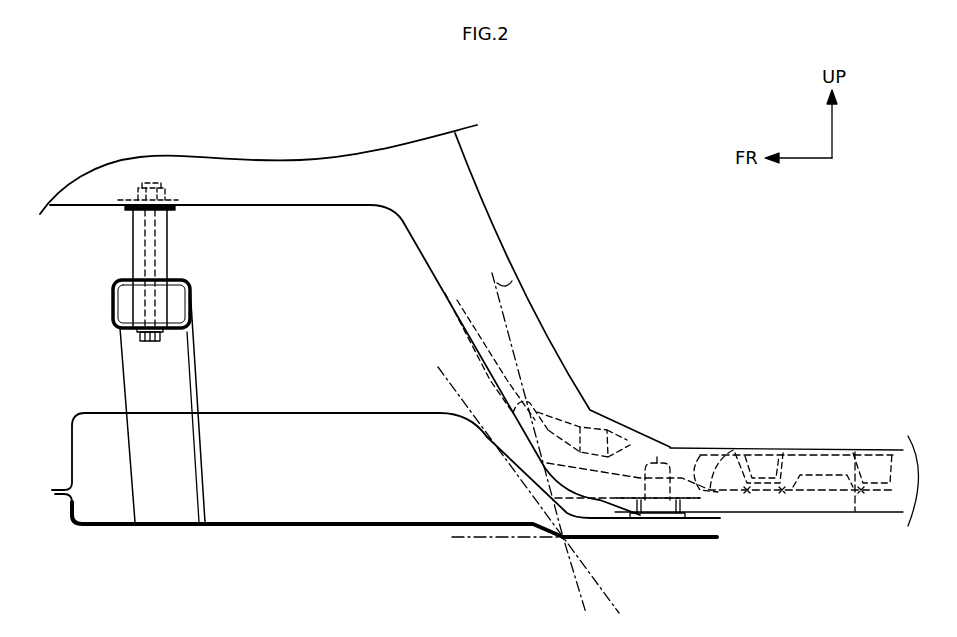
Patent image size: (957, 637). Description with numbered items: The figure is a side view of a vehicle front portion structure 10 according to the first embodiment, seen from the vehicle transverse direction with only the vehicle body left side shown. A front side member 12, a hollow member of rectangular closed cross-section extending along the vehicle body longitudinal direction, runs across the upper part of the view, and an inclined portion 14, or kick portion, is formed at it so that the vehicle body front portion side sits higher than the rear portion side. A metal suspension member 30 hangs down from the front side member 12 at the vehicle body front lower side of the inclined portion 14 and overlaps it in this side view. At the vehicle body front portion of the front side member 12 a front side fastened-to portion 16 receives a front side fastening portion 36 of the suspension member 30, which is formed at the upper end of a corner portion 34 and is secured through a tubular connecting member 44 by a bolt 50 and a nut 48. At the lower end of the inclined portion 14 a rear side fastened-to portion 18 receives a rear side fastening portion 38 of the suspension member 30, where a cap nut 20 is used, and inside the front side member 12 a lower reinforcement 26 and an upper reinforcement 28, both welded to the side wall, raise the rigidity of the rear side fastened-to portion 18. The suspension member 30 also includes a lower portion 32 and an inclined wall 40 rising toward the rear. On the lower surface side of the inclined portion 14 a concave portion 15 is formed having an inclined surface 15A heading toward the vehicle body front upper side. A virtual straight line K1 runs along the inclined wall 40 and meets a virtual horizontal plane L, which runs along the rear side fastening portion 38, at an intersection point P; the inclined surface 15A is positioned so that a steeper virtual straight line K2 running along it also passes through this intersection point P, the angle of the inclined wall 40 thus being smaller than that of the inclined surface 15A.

The vehicle front portion structure 10 is at (366, 284).
The front side member 12 is at (257, 206).
The inclined portion 14 is at (522, 291).
The concave portion 15 is at (504, 341).
The inclined surface 15A is at (520, 380).
The front side fastened-to portion 16 is at (122, 209).
The rear side fastened-to portion 18 is at (687, 513).
The cap nut 20 is at (657, 457).
The lower reinforcement 26 is at (733, 450).
The upper reinforcement 28 is at (700, 456).
The suspension member 30 is at (343, 527).
The lower member 32 is at (252, 412).
The corner portion 34 is at (122, 366).
The front side fastening portion 36 is at (127, 278).
The rear side fastening portion 38 is at (688, 519).
The inclined wall 40 is at (520, 464).
The connecting member 44 is at (168, 243).
The nut 48 is at (165, 189).
The bolt 50 is at (150, 341).
The virtual straight line K1 is at (447, 375).
The virtual straight line K2 is at (506, 284).
The virtual horizontal plane L is at (510, 539).
The intersection point P is at (562, 540).